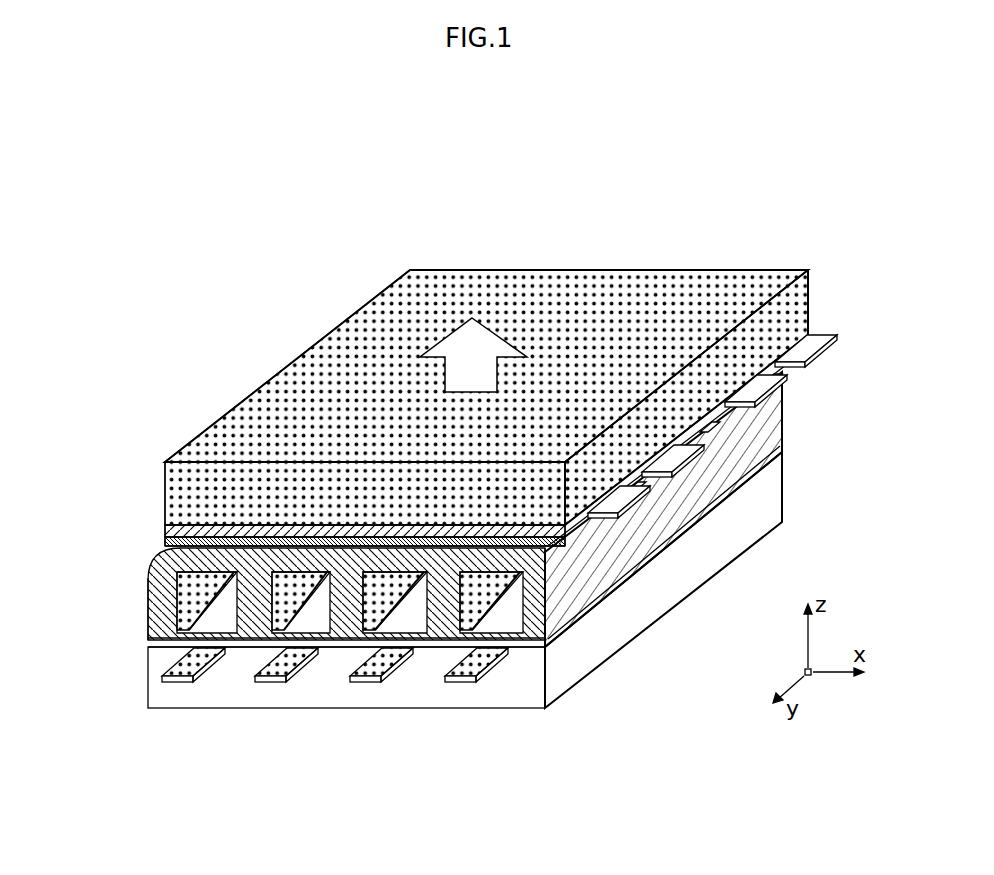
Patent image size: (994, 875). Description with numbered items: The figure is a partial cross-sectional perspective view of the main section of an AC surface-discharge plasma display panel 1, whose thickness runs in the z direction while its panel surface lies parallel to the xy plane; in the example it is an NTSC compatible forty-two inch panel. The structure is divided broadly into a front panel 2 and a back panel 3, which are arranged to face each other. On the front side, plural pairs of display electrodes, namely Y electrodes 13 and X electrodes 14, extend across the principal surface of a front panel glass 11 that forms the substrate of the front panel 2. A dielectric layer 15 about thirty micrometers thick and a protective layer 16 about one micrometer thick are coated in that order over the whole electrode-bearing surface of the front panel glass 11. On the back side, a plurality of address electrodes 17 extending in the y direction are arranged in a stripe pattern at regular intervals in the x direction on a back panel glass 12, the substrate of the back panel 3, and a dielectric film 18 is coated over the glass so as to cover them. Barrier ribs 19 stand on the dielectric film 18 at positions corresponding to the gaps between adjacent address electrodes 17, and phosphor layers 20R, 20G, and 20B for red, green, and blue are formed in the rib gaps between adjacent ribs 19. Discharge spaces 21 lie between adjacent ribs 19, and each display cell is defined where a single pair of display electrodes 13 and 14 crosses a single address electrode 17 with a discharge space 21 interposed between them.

The plasma display panel 1 is at (538, 222).
The front panel 2 is at (318, 314).
The back panel 3 is at (810, 470).
The front panel glass 11 is at (180, 492).
The back panel glass 12 is at (417, 708).
The Y electrodes 13 is at (620, 497).
The X electrodes 14 is at (662, 457).
The dielectric layer 15 is at (165, 532).
The protective layer 16 is at (167, 542).
The address electrodes 17 is at (200, 670).
The dielectric film 18 is at (148, 641).
The barrier ribs 19 is at (450, 614).
The red phosphor layer 20R is at (170, 645).
The green phosphor layer 20G is at (255, 648).
The blue phosphor layer 20B is at (360, 642).
The discharge spaces 21 is at (500, 588).